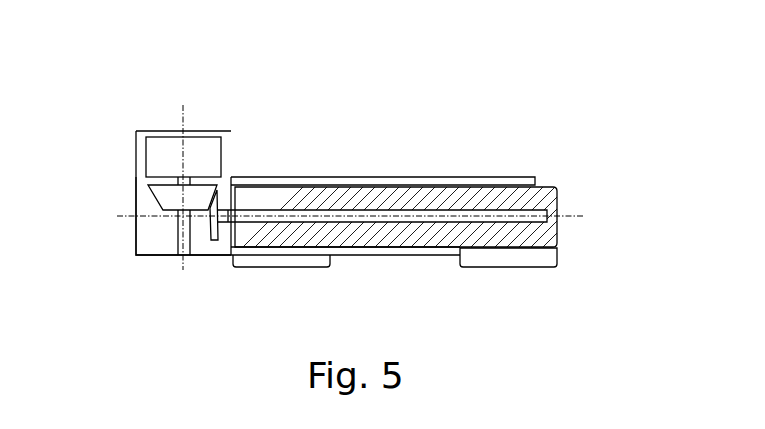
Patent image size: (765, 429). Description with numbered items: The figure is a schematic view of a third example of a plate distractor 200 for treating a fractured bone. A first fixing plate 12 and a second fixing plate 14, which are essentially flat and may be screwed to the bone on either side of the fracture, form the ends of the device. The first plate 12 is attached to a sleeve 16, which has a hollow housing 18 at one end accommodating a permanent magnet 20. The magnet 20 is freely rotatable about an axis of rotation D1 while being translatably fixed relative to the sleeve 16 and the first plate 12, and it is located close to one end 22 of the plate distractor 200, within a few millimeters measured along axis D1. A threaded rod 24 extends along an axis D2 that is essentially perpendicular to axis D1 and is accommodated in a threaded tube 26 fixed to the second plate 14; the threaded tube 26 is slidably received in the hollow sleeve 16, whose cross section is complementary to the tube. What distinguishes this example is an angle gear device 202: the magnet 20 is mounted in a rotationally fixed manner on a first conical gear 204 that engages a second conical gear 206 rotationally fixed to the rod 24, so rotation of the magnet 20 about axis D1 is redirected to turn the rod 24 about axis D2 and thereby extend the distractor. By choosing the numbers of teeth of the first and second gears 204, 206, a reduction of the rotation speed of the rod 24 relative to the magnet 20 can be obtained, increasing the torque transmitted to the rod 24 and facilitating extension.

The first fixing plate 12 is at (296, 262).
The second fixing plate 14 is at (518, 255).
The sleeve 16 is at (455, 178).
The hollow housing 18 is at (149, 239).
The permanent magnet 20 is at (160, 137).
The end of the plate distractor 22 is at (177, 121).
The threaded rod 24 is at (358, 190).
The threaded tube 26 is at (423, 251).
The plate distractor 200 is at (322, 153).
The angle gear device 202 is at (127, 171).
The first conical gear 204 is at (165, 192).
The second conical gear 206 is at (208, 233).
The axis of rotation of the magnet D1 is at (186, 122).
The axis of the rod D2 is at (572, 213).